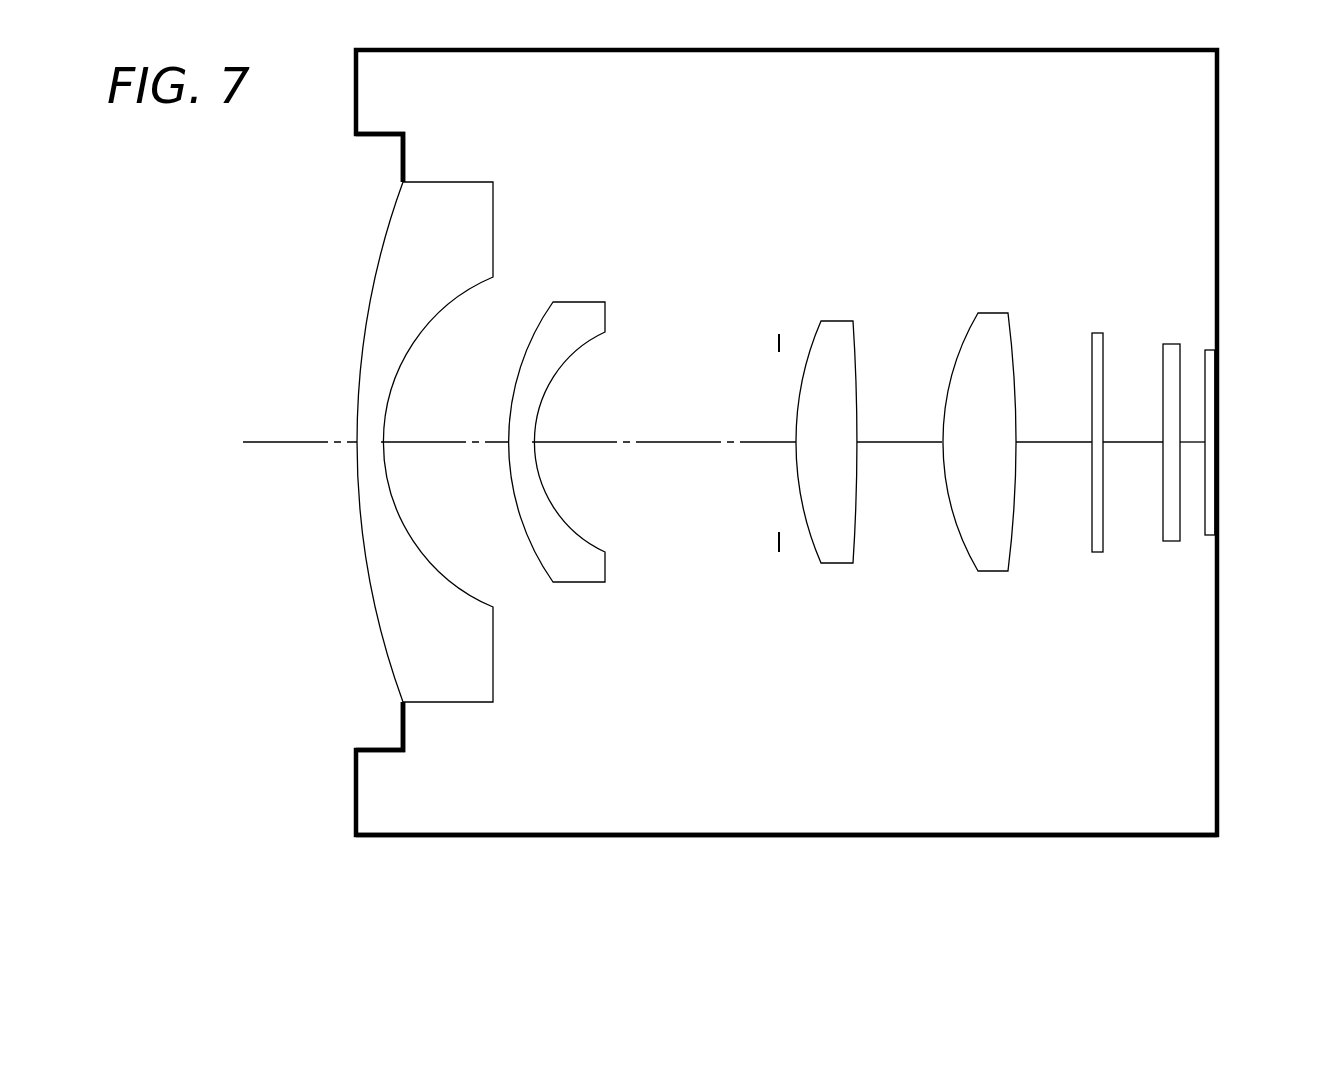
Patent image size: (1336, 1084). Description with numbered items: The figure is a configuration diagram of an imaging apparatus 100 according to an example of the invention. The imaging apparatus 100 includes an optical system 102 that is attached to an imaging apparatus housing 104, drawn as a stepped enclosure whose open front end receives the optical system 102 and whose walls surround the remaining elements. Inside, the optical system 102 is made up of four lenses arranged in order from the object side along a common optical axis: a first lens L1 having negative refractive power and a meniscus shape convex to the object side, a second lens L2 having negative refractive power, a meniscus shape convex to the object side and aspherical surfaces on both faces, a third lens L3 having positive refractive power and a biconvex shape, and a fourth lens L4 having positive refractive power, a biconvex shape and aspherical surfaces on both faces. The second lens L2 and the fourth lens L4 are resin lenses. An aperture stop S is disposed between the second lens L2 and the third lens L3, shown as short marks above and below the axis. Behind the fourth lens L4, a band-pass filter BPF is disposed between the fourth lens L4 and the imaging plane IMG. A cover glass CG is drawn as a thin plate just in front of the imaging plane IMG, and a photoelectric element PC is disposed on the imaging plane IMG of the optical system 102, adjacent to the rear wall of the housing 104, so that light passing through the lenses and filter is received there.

The imaging apparatus 100 is at (1072, 860).
The optical system 102 is at (300, 695).
The imaging apparatus housing 104 is at (862, 837).
The first lens L1 is at (446, 182).
The second lens L2 is at (580, 302).
The third lens L3 is at (836, 321).
The fourth lens L4 is at (993, 313).
The aperture stop S is at (779, 333).
The band-pass filter BPF is at (1098, 552).
The cover glass CG is at (1170, 541).
The photoelectric element PC is at (1218, 409).
The imaging plane IMG is at (1200, 350).